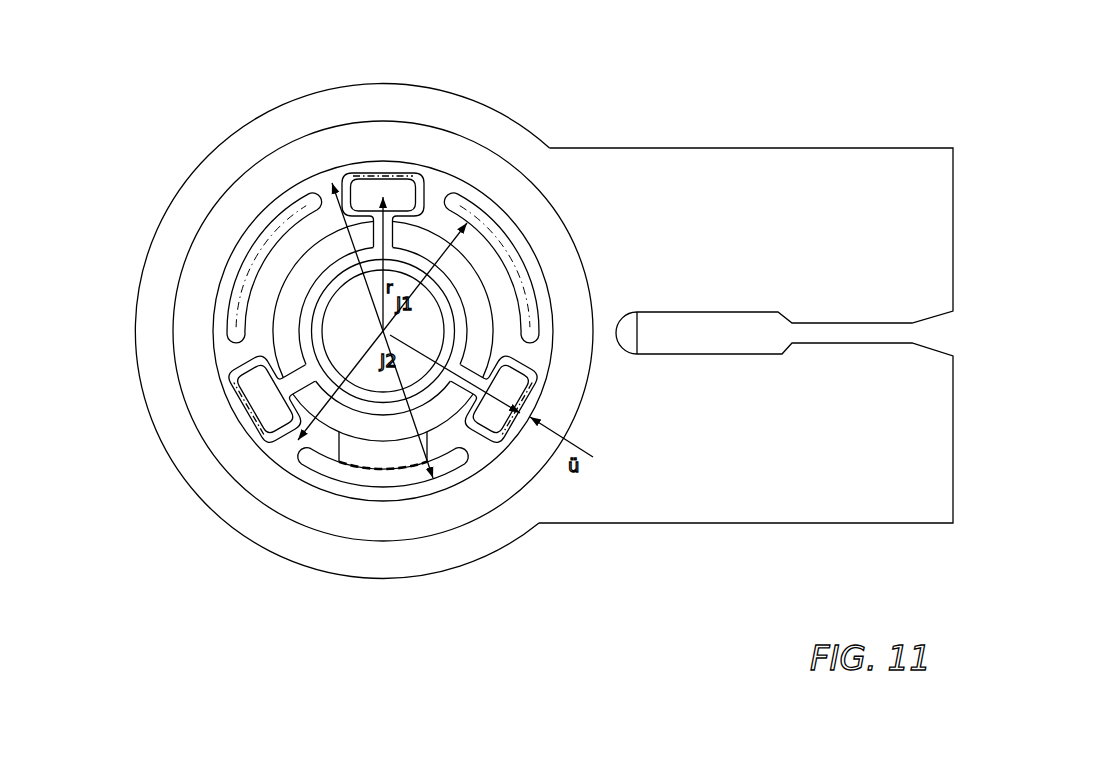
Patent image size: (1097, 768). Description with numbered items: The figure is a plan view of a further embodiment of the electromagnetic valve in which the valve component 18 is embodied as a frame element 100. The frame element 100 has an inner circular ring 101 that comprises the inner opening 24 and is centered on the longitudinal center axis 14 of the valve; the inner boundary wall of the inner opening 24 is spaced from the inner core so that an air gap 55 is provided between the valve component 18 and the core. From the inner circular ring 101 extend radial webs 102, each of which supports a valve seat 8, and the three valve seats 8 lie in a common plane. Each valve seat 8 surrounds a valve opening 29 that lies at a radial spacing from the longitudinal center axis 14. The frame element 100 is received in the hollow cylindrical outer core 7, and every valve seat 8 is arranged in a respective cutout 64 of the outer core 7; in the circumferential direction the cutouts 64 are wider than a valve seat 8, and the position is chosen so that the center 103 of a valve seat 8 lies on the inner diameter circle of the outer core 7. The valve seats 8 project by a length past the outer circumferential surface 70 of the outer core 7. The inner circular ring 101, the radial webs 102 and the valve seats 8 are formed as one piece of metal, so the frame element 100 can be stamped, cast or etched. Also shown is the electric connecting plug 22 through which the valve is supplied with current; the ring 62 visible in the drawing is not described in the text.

The outer core 7 is at (316, 483).
The valve seat 8 is at (375, 193).
The longitudinal center axis 14 is at (383, 331).
The valve component 18 is at (473, 282).
The electric connecting plug 22 is at (772, 203).
The inner opening 24 is at (343, 298).
The valve opening 29 is at (362, 197).
The air gap 55 is at (320, 328).
The outer ring 62 is at (540, 284).
The cutout 64 is at (300, 460).
The circumferential surface 70 is at (393, 480).
The frame element 100 is at (441, 416).
The inner circular ring 101 is at (330, 270).
The radial web 102 is at (418, 236).
The center 103 is at (386, 196).